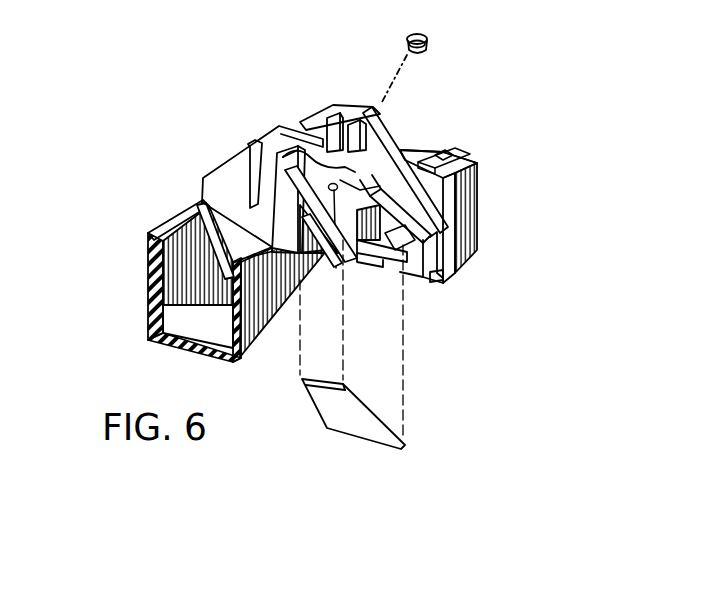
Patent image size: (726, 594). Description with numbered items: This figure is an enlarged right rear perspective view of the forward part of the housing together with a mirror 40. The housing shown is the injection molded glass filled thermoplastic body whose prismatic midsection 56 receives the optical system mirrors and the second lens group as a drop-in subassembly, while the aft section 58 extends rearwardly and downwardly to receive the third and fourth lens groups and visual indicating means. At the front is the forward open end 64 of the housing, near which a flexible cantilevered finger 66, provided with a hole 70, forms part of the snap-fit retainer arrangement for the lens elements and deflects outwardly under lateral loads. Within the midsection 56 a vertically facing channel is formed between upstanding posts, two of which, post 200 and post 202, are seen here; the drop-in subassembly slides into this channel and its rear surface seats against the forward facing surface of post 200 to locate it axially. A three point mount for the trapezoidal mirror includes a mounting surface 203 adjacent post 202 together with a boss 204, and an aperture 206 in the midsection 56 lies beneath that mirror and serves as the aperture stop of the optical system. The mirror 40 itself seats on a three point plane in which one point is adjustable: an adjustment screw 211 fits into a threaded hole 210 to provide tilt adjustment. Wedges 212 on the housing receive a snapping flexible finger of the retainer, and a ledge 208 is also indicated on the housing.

The mirror 40 is at (331, 410).
The prismatic midsection 56 is at (280, 128).
The aft section 58 is at (167, 212).
The open end 64 is at (396, 240).
The flexible cantilevered finger 66 is at (458, 155).
The hole 70 is at (440, 153).
The upstanding post 200 is at (325, 120).
The upstanding post 202 is at (355, 122).
The mounting surface 203 is at (378, 122).
The boss 204 is at (412, 207).
The aperture 206 is at (470, 162).
The ledge 208 is at (352, 262).
The threaded hole 210 is at (344, 300).
The adjustment screw 211 is at (428, 37).
The wedges 212 is at (336, 184).